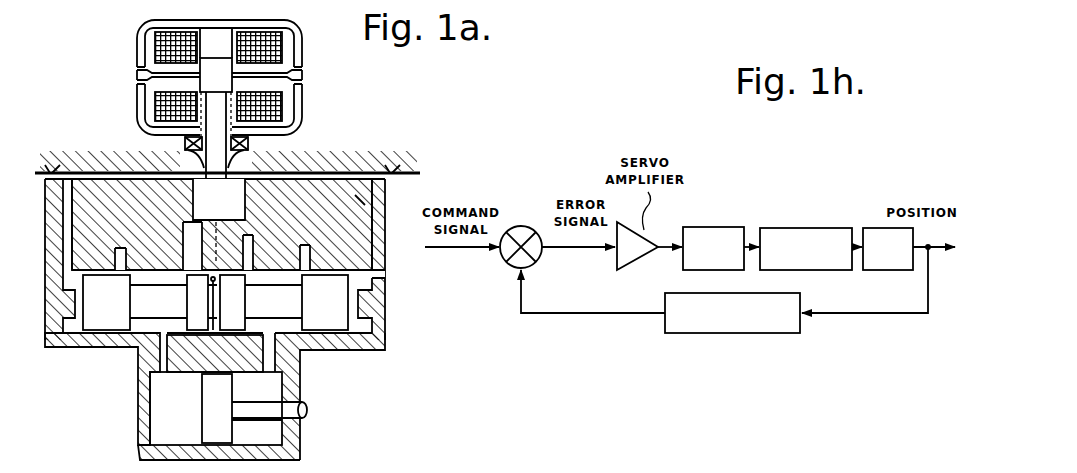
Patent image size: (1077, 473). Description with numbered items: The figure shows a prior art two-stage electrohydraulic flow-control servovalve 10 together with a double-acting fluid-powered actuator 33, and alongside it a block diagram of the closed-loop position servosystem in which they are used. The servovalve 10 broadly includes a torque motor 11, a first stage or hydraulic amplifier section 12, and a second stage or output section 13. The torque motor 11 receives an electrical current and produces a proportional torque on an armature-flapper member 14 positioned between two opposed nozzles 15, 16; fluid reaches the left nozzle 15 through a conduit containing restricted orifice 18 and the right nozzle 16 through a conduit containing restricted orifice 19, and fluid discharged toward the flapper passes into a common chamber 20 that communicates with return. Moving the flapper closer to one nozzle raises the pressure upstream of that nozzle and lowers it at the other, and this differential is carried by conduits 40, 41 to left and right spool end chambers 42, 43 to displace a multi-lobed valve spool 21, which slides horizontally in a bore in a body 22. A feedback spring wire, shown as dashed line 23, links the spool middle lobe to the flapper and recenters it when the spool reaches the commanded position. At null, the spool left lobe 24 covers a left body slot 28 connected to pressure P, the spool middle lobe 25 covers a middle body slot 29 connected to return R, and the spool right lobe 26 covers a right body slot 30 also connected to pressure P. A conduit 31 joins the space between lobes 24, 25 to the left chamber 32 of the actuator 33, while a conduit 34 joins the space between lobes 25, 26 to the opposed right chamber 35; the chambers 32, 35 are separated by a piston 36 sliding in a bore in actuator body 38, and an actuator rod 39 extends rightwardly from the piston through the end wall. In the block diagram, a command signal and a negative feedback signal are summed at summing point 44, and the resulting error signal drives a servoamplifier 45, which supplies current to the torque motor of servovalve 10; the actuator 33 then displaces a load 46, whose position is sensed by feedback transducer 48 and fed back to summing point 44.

In FIG. 1A, the electrohydraulic servovalve 10 is at (352, 106).
In FIG. 1H, the electrohydraulic servovalve 10 is at (722, 224).
In FIG. 1A, the torque motor 11 is at (128, 40).
In FIG. 1A, the first stage or hydraulic amplifier section 12 is at (160, 200).
In FIG. 1A, the second stage or output section 13 is at (128, 350).
In FIG. 1A, the armature-flapper member 14 is at (208, 85).
In FIG. 1A, the left nozzle 15 is at (184, 161).
In FIG. 1A, the right nozzle 16 is at (254, 162).
In FIG. 1A, the restricted orifice 18 is at (52, 166).
In FIG. 1A, the restricted orifice 19 is at (392, 167).
In FIG. 1A, the common chamber 20 is at (247, 210).
In FIG. 1A, the valve spool 21 is at (356, 327).
In FIG. 1A, the body 22 is at (278, 260).
In FIG. 1A, the feedback spring wire 23 is at (219, 230).
In FIG. 1A, the spool left lobe 24 is at (97, 310).
In FIG. 1A, the spool middle lobe 25 is at (197, 302).
In FIG. 1A, the spool right lobe 26 is at (316, 310).
In FIG. 1A, the left body slot 28 is at (126, 256).
In FIG. 1A, the middle body slot 29 is at (246, 270).
In FIG. 1A, the right body slot 30 is at (322, 260).
In FIG. 1A, the conduit 31 is at (165, 353).
In FIG. 1A, the left chamber 32 is at (177, 426).
In FIG. 1A, the fluid-powered actuator 33 is at (302, 388).
In FIG. 1H, the fluid-powered actuator 33 is at (810, 228).
In FIG. 1A, the conduit 34 is at (281, 359).
In FIG. 1A, the right chamber 35 is at (264, 436).
In FIG. 1A, the piston 36 is at (218, 444).
In FIG. 1A, the actuator body 38 is at (148, 457).
In FIG. 1A, the actuator rod 39 is at (262, 404).
In FIG. 1A, the conduit 40 is at (63, 226).
In FIG. 1A, the conduit 41 is at (369, 212).
In FIG. 1A, the left spool end chamber 42 is at (52, 341).
In FIG. 1A, the right spool end chamber 43 is at (378, 284).
In FIG. 1H, the summing point 44 is at (528, 224).
In FIG. 1H, the servoamplifier 45 is at (636, 266).
In FIG. 1H, the load 46 is at (874, 226).
In FIG. 1H, the feedback transducer 48 is at (735, 333).